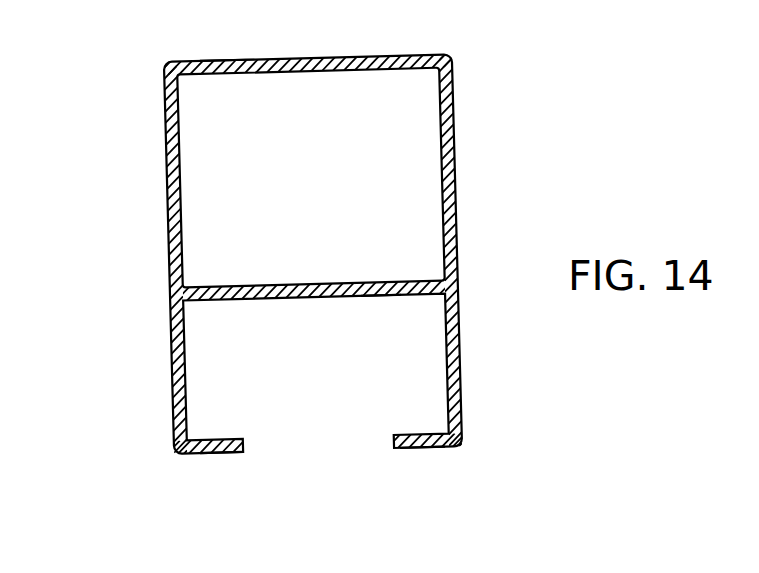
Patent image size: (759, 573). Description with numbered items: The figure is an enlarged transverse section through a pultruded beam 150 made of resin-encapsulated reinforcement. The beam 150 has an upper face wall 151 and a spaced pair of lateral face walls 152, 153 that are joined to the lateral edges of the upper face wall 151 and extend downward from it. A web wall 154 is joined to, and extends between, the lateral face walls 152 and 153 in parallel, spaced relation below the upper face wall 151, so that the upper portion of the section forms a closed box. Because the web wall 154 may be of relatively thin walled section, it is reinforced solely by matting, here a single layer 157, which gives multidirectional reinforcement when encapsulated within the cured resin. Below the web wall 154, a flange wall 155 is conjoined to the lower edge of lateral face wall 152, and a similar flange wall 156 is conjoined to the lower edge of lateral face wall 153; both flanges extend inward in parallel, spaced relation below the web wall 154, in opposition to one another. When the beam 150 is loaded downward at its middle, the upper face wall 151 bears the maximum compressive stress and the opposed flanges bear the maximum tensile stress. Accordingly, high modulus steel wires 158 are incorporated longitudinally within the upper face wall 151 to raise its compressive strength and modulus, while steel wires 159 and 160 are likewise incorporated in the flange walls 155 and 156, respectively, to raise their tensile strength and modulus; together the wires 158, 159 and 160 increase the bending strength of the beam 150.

The beam 150 is at (464, 116).
The upper face wall 151 is at (293, 60).
The lateral face wall 152 is at (168, 183).
The lateral face wall 153 is at (458, 197).
The web wall 154 is at (336, 283).
The flange wall 155 is at (222, 440).
The flange wall 156 is at (431, 437).
The layer of matting 157 is at (379, 298).
The steel wires 158 is at (252, 63).
The steel wires 159 is at (228, 455).
The steel wires 160 is at (437, 450).